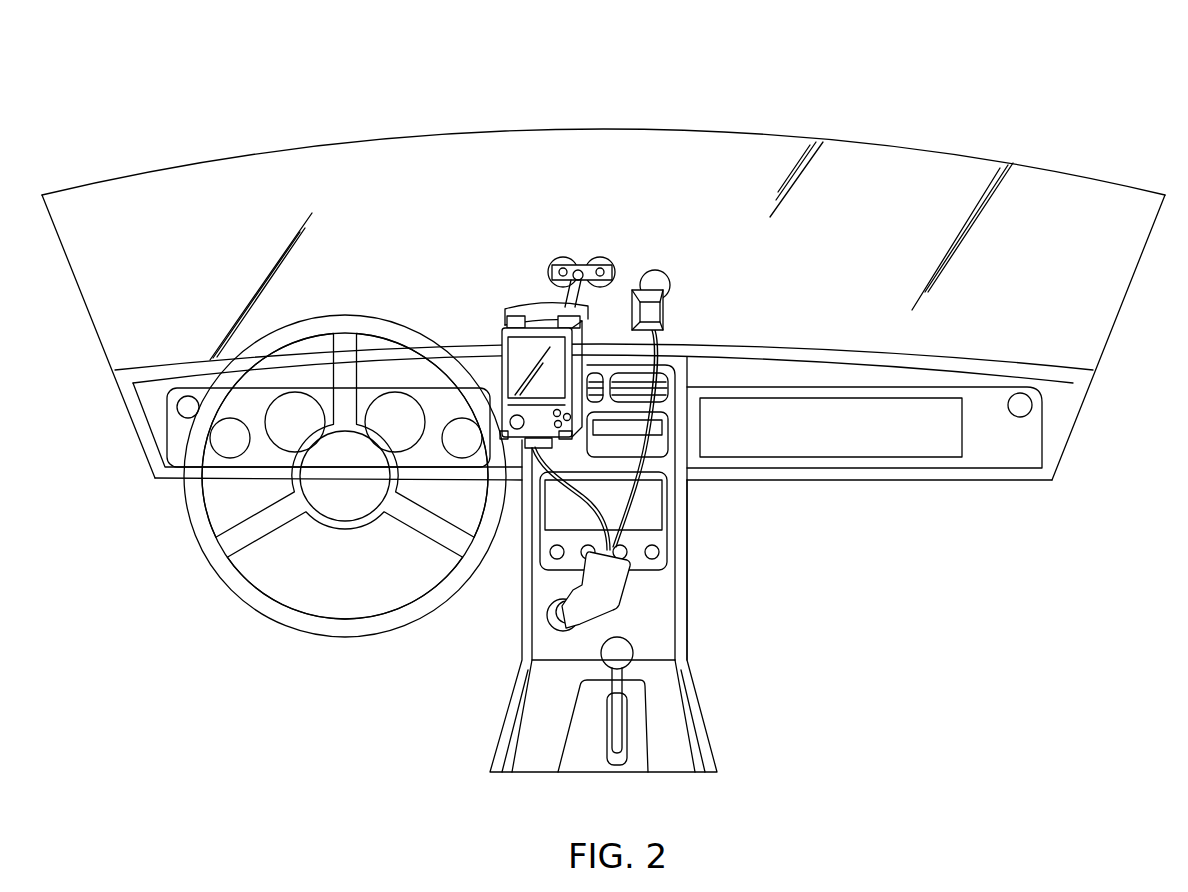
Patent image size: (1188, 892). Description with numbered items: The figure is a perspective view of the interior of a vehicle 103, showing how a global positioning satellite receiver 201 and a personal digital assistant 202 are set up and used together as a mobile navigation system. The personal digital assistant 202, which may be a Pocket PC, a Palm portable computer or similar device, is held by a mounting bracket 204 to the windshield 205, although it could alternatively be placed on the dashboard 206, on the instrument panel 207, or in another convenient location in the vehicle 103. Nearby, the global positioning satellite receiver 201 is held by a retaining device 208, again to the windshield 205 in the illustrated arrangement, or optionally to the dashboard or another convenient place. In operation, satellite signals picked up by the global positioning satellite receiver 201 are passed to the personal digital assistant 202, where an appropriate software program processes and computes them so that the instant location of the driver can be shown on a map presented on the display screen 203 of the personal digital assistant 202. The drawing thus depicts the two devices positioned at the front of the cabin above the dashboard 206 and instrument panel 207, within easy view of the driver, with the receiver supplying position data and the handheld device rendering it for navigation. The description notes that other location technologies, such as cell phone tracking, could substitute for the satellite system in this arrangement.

The vehicle 103 is at (1073, 108).
The global positioning satellite receiver 201 is at (650, 312).
The personal digital assistant 202 is at (570, 358).
The display screen 203 is at (522, 357).
The mounting bracket 204 is at (570, 296).
The windshield 205 is at (760, 143).
The dashboard 206 is at (837, 358).
The instrument panel 207 is at (603, 403).
The retaining device 208 is at (675, 293).